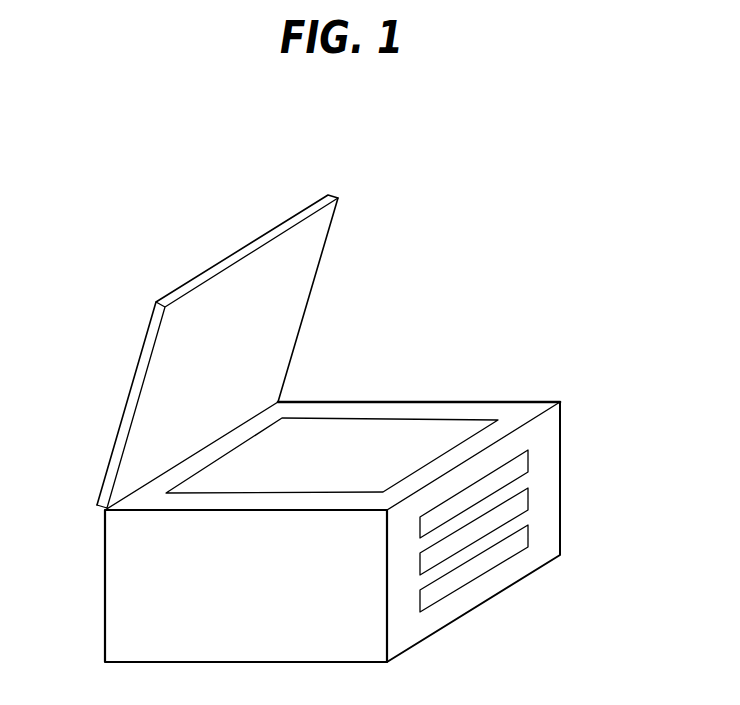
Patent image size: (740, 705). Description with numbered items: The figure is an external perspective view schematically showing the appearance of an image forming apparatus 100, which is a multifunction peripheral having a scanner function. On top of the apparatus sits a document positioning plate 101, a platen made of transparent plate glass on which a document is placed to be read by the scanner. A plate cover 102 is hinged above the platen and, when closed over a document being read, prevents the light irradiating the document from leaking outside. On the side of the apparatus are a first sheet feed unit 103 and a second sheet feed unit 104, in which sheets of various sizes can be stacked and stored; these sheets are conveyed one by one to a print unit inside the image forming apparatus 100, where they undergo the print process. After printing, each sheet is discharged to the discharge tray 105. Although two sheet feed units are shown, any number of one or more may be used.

The image forming apparatus 100 is at (367, 142).
The document positioning plate 101 is at (427, 430).
The plate cover 102 is at (137, 363).
The first sheet feed unit 103 is at (530, 498).
The second sheet feed unit 104 is at (530, 535).
The discharge tray 105 is at (530, 460).